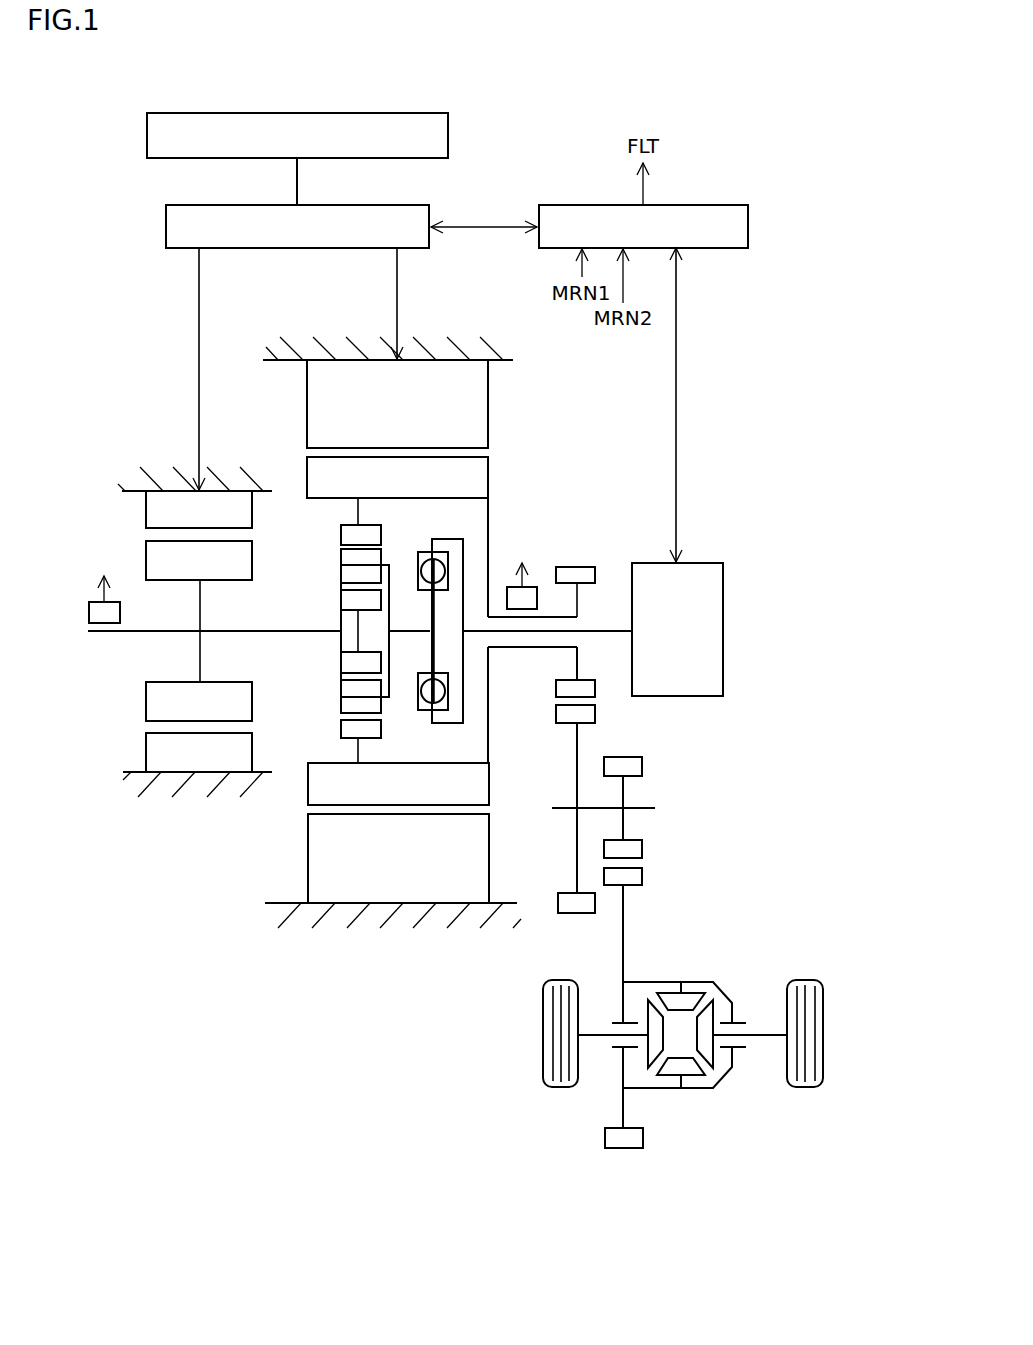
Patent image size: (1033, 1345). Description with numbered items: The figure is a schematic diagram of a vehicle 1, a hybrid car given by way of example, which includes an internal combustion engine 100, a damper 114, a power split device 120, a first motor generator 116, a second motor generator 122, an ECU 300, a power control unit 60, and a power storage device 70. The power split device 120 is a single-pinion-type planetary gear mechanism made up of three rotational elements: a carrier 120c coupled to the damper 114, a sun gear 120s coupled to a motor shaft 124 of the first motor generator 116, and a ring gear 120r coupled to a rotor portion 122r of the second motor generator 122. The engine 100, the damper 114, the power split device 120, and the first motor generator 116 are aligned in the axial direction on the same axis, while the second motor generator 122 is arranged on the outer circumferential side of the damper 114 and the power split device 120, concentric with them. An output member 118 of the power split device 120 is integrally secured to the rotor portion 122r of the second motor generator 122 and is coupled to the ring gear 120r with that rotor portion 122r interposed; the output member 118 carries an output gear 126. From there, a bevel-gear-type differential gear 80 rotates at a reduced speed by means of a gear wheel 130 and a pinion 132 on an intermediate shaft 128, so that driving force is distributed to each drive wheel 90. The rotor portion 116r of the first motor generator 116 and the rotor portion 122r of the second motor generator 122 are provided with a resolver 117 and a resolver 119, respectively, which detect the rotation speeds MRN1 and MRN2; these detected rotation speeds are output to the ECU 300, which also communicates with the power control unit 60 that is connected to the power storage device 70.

The vehicle 1 is at (773, 49).
The power storage device 70 is at (407, 113).
The power control unit 60 is at (406, 205).
The ECU 300 is at (706, 205).
The second motor generator 122 is at (513, 410).
The rotor portion 122r is at (489, 481).
The output member 118 is at (489, 735).
The power split device 120 is at (401, 585).
The sun gear 120s is at (350, 661).
The carrier 120c is at (389, 663).
The ring gear 120r is at (350, 727).
The damper 114 is at (443, 560).
The motor shaft 124 is at (278, 628).
The resolver 119 is at (537, 600).
The output gear 126 is at (572, 566).
The engine 100 is at (723, 580).
The gear wheel 130 is at (595, 712).
The intermediate shaft 128 is at (668, 795).
The pinion 132 is at (644, 853).
The differential gear 80 is at (688, 1095).
The drive wheel 90 is at (564, 1088).
The first motor generator 116 is at (167, 654).
The rotor portion 116r is at (155, 702).
The resolver 117 is at (92, 611).